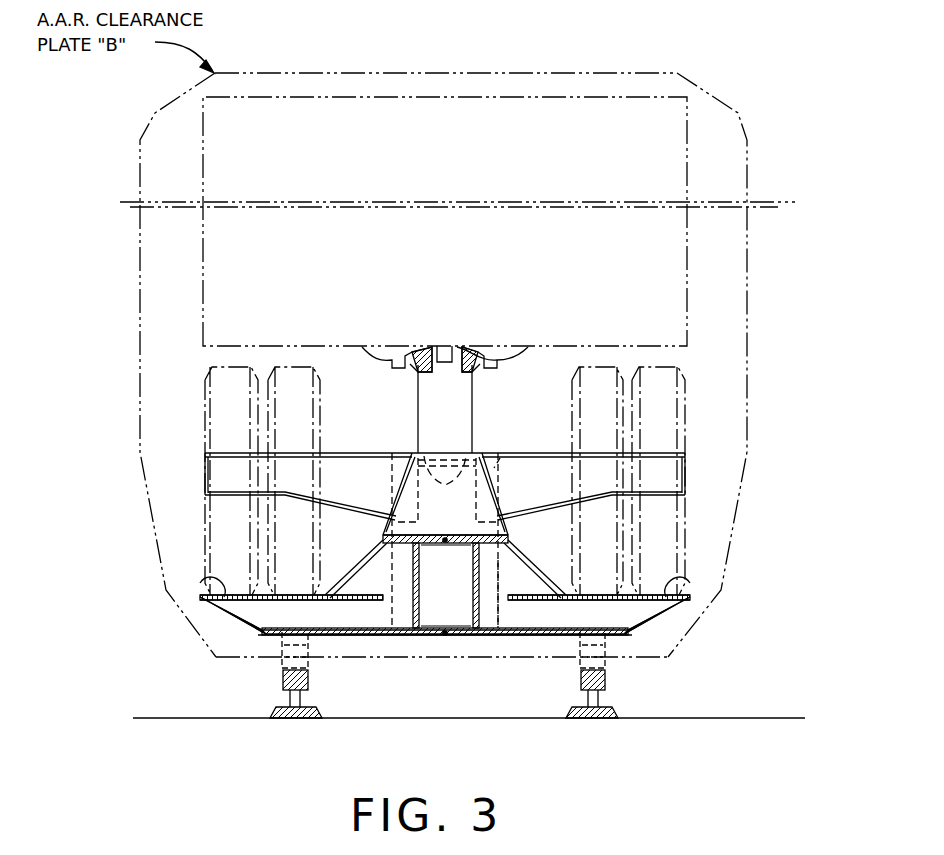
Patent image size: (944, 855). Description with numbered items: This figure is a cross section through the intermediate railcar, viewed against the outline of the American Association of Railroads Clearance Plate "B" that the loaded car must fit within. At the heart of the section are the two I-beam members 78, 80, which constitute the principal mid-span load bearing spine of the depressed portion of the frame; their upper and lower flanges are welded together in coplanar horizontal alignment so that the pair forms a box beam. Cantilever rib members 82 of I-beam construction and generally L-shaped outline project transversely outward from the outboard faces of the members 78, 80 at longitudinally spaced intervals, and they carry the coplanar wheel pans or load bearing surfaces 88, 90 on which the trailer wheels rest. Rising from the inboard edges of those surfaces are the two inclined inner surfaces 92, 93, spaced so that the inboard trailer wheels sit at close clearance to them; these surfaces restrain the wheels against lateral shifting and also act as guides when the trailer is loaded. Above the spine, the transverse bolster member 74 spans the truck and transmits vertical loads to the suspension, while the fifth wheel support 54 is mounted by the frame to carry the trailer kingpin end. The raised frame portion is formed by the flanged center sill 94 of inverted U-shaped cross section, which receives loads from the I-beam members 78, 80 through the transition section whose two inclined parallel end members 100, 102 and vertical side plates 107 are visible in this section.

The fifth wheel support 54 is at (468, 362).
The transverse bolster member 74 is at (555, 452).
The I-beam member 78 is at (474, 600).
The I-beam member 80 is at (416, 600).
The cantilever rib member 82 is at (332, 624).
The wheel pan 88 is at (690, 583).
The wheel pan 90 is at (200, 583).
The inclined inner surface 92 is at (563, 585).
The inclined inner surface 93 is at (327, 585).
The flanged center sill 94 is at (502, 455).
The inclined parallel end member 100 is at (500, 578).
The inclined parallel end member 102 is at (461, 515).
The vertical side plate 107 is at (456, 472).